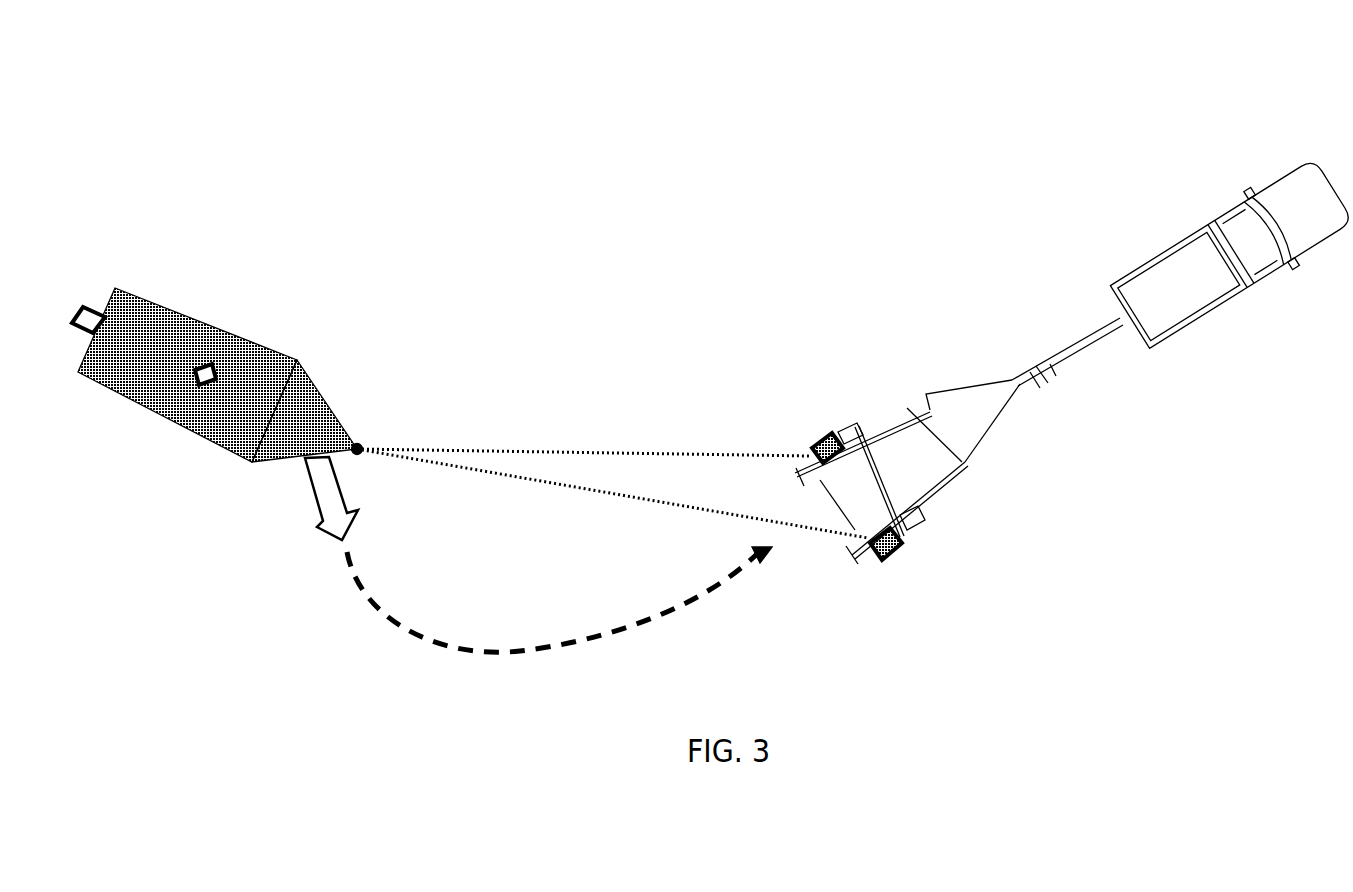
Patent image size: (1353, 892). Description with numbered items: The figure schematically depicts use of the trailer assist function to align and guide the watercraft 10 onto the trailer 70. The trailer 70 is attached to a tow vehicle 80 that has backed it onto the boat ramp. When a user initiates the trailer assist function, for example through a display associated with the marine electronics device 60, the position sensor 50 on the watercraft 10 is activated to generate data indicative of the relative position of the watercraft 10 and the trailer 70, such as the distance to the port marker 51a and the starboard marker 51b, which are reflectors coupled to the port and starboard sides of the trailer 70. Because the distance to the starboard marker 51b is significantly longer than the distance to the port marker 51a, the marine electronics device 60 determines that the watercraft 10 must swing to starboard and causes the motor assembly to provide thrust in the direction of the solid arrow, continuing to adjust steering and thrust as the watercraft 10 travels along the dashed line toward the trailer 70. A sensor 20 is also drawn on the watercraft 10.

The watercraft 10 is at (228, 268).
The sensor 20 is at (88, 306).
The marine electronics device 60 is at (202, 392).
The position sensor 50 is at (360, 443).
The trailer 70 is at (938, 315).
The port marker 51a is at (820, 437).
The starboard marker 51b is at (898, 548).
The tow vehicle 80 is at (1147, 220).